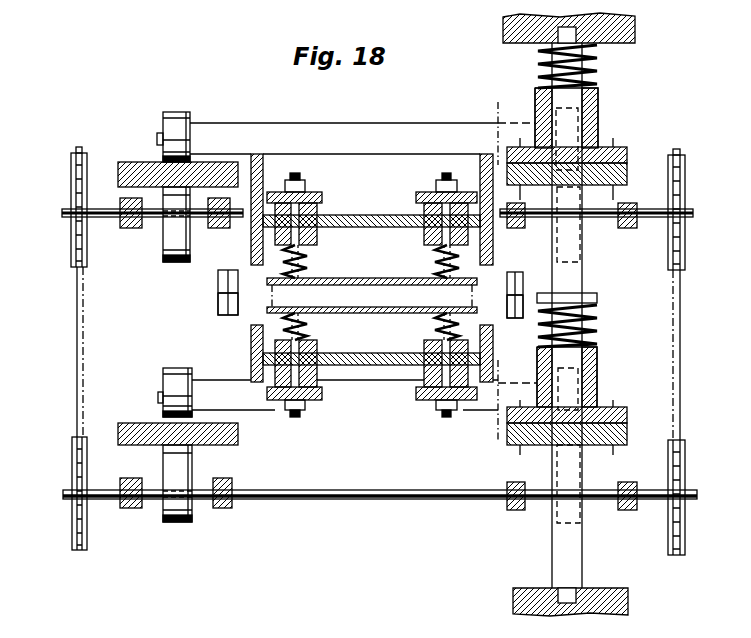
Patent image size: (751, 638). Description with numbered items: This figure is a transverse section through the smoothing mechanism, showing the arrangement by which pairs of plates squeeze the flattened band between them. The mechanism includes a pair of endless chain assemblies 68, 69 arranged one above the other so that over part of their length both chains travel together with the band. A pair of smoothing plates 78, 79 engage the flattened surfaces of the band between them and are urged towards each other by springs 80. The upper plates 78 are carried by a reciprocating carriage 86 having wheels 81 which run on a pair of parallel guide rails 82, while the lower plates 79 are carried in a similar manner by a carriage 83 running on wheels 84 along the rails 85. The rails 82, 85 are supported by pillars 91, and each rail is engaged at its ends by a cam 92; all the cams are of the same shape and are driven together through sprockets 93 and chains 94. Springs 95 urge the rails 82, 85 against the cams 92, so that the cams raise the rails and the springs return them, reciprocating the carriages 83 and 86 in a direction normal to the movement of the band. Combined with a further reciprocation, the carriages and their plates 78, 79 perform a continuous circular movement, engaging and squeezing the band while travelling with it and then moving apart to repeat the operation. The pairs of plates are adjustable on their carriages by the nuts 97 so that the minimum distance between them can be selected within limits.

The endless chain assembly 68 is at (218, 280).
The endless chain assembly 69 is at (218, 305).
The plate 78 is at (384, 278).
The plate 79 is at (366, 314).
The spring 80 is at (302, 273).
The wheel 81 is at (165, 114).
The guide rail 82 is at (128, 162).
The carriage 83 is at (251, 357).
The wheel 84 is at (165, 371).
The rail 85 is at (130, 423).
The reciprocating carriage 86 is at (247, 153).
The pillar 91 is at (582, 274).
The cam 92 is at (163, 250).
The sprocket 93 is at (71, 180).
The chain 94 is at (77, 346).
The spring 95 is at (598, 78).
The nut 97 is at (416, 197).